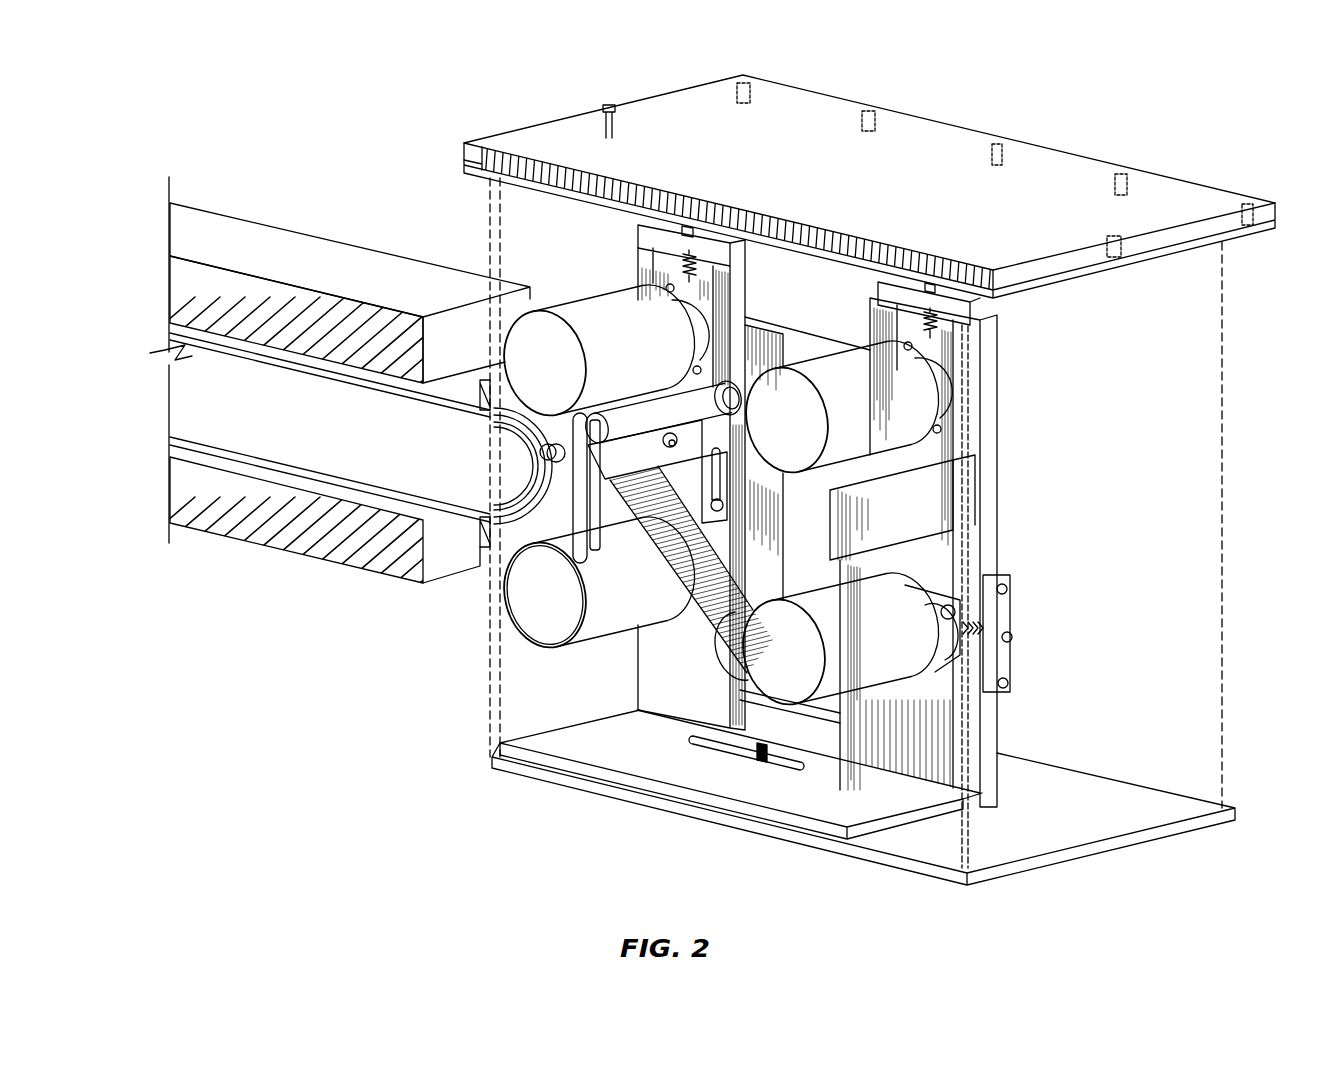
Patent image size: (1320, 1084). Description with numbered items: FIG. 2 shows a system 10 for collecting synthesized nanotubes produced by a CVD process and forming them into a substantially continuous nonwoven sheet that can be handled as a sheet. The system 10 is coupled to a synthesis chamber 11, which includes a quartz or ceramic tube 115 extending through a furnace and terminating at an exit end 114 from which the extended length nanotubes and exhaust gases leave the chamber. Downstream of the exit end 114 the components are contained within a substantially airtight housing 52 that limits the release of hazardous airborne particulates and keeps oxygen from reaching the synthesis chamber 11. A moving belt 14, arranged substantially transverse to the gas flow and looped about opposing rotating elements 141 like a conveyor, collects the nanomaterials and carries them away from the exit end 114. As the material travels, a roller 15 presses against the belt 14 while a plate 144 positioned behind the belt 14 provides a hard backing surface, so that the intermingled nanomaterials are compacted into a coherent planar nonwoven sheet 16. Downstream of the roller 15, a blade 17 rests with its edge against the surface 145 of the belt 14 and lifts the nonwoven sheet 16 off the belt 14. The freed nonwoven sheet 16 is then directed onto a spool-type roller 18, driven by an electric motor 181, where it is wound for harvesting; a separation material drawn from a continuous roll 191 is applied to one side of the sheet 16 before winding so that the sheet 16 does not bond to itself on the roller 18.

The system 10 is at (346, 80).
The synthesis chamber 11 is at (211, 204).
The quartz or ceramic tube 115 is at (206, 322).
The exit end 114 is at (330, 490).
The housing 52 is at (1226, 366).
The belt 14 is at (503, 612).
The rotating elements 141 is at (545, 345).
The plate 144 is at (580, 514).
The surface of belt 145 is at (740, 638).
The roller 15 is at (667, 403).
The nonwoven sheet 16 is at (708, 618).
The blade 17 is at (652, 468).
The roller 18 is at (875, 673).
The electric motor 181 is at (973, 640).
The continuous roll 191 is at (900, 395).